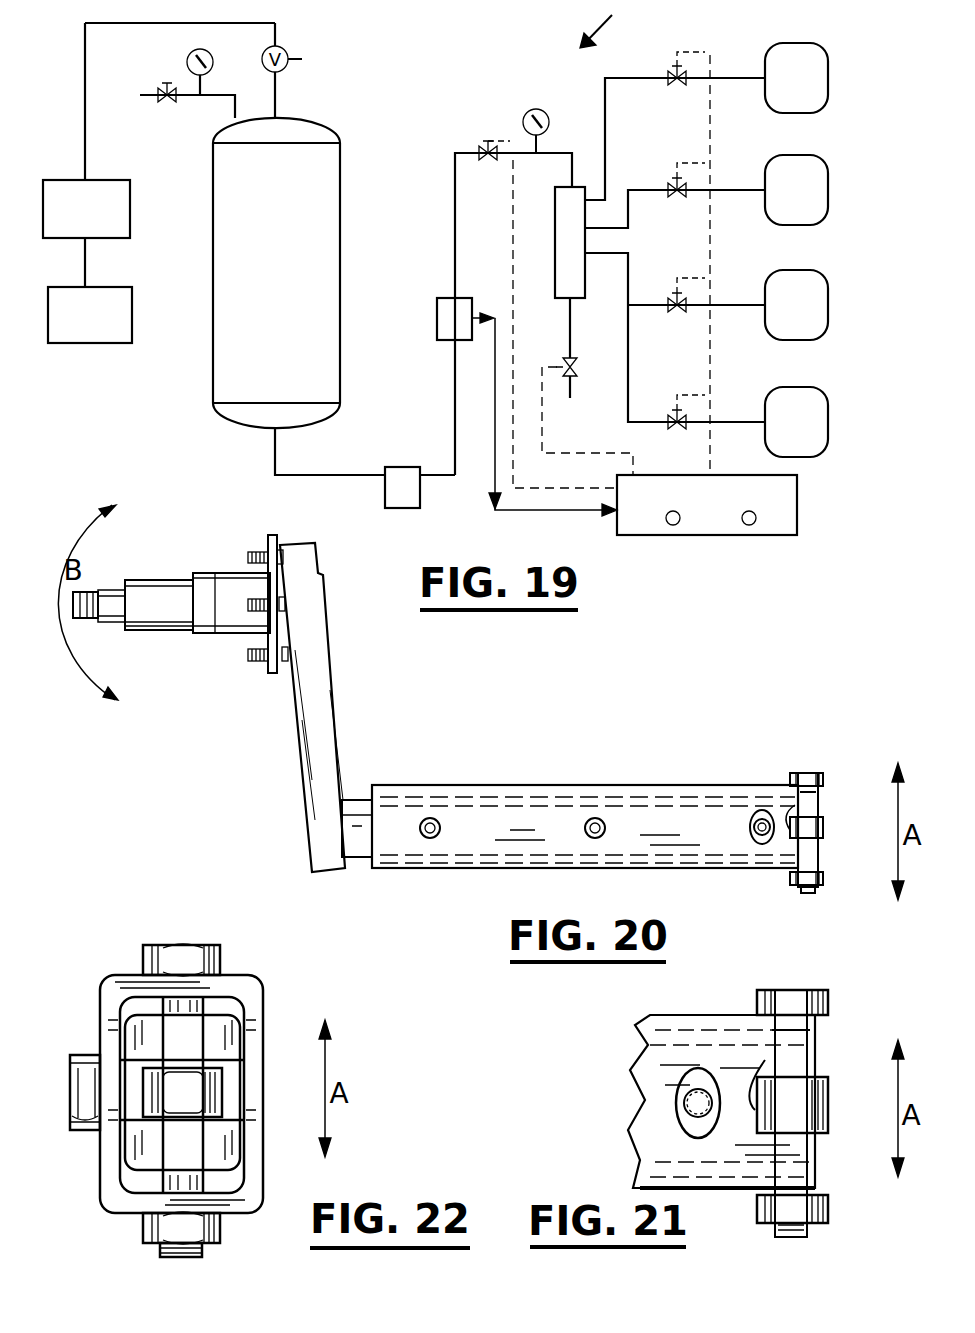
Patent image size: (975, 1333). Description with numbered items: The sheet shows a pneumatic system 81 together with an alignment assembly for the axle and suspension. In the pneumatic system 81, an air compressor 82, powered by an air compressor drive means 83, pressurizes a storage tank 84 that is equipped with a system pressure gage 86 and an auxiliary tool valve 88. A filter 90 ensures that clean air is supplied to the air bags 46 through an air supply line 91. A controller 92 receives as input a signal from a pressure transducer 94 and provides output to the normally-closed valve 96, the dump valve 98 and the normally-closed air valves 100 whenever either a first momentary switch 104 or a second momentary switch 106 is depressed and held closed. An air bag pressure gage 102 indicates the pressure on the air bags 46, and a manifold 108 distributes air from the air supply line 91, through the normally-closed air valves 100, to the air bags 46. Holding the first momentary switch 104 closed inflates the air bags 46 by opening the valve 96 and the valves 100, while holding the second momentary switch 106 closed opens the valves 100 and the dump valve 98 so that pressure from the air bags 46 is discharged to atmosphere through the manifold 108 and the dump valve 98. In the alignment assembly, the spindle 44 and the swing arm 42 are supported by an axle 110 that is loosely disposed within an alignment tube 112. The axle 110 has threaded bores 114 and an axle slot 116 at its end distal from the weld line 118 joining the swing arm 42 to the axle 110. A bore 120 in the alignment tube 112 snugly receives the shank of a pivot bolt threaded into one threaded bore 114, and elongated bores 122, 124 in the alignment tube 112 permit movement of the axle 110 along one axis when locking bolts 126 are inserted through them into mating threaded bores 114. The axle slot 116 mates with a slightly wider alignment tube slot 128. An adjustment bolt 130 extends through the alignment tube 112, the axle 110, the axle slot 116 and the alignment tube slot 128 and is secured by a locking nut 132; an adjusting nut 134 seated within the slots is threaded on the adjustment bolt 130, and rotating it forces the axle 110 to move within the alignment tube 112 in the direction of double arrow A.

In FIG. 19, the pneumatic system 81 is at (613, 27).
In FIG. 19, the air compressor 82 is at (118, 213).
In FIG. 19, the air compressor drive means 83 is at (133, 318).
In FIG. 19, the storage tank 84 is at (342, 240).
In FIG. 19, the system pressure gage 86 is at (190, 52).
In FIG. 19, the auxiliary tool valve 88 is at (172, 104).
In FIG. 19, the filter 90 is at (404, 510).
In FIG. 19, the air supply line 91 is at (453, 430).
In FIG. 19, the controller 92 is at (797, 516).
In FIG. 19, the pressure transducer 94 is at (438, 322).
In FIG. 19, the normally-closed valve 96 is at (480, 148).
In FIG. 19, the dump valve 98 is at (563, 360).
In FIG. 19, the normally-closed air valves 100 is at (683, 88).
In FIG. 19, the air bag pressure gage 102 is at (530, 110).
In FIG. 19, the first momentary switch 104 is at (672, 526).
In FIG. 19, the second momentary switch 106 is at (750, 526).
In FIG. 19, the manifold 108 is at (562, 232).
In FIG. 19, the air bags 46 is at (830, 70).
In FIG. 20, the swing arm 42 is at (330, 670).
In FIG. 20, the spindle 44 is at (108, 590).
In FIG. 20, the axle 110 is at (350, 800).
In FIG. 22, the axle 110 is at (240, 1020).
In FIG. 21, the axle 110 is at (735, 1045).
In FIG. 20, the alignment tube 112 is at (490, 785).
In FIG. 22, the alignment tube 112 is at (255, 980).
In FIG. 20, the threaded bores 114 is at (433, 818).
In FIG. 21, the threaded bores 114 is at (695, 1095).
In FIG. 20, the axle slot 116 is at (796, 818).
In FIG. 21, the axle slot 116 is at (770, 1068).
In FIG. 20, the weld line 118 is at (335, 824).
In FIG. 20, the bore 120 is at (430, 840).
In FIG. 20, the elongated bore 122 is at (600, 818).
In FIG. 20, the elongated bore 124 is at (762, 810).
In FIG. 21, the elongated bore 124 is at (690, 1130).
In FIG. 22, the locking bolts 126 is at (86, 1055).
In FIG. 20, the alignment tube slot 128 is at (790, 795).
In FIG. 21, the alignment tube slot 128 is at (770, 1060).
In FIG. 20, the adjustment bolt 130 is at (805, 773).
In FIG. 22, the adjustment bolt 130 is at (180, 945).
In FIG. 21, the adjustment bolt 130 is at (785, 990).
In FIG. 20, the locking nut 132 is at (820, 890).
In FIG. 22, the locking nut 132 is at (225, 1227).
In FIG. 21, the locking nut 132 is at (828, 1205).
In FIG. 20, the adjusting nut 134 is at (826, 832).
In FIG. 22, the adjusting nut 134 is at (210, 1093).
In FIG. 21, the adjusting nut 134 is at (830, 1108).